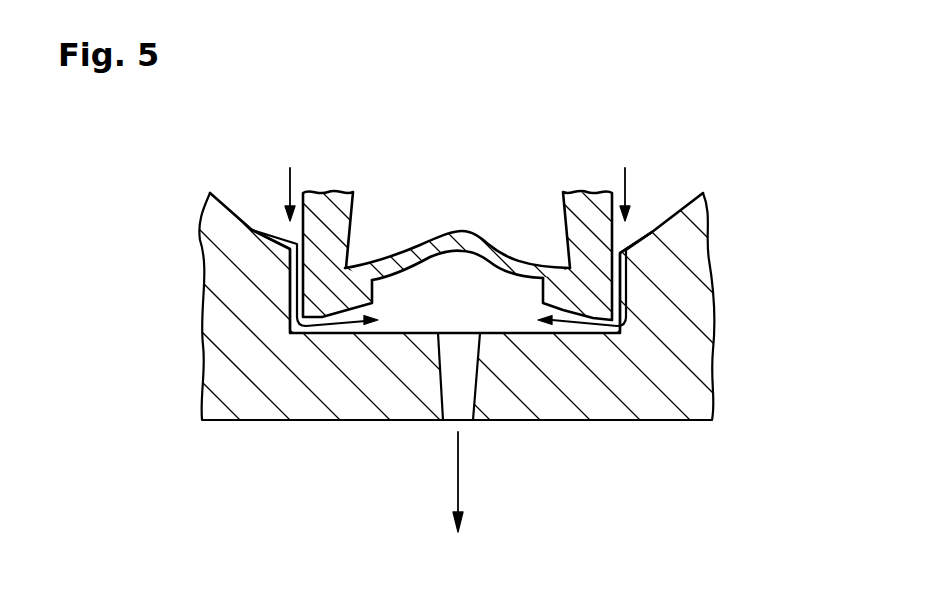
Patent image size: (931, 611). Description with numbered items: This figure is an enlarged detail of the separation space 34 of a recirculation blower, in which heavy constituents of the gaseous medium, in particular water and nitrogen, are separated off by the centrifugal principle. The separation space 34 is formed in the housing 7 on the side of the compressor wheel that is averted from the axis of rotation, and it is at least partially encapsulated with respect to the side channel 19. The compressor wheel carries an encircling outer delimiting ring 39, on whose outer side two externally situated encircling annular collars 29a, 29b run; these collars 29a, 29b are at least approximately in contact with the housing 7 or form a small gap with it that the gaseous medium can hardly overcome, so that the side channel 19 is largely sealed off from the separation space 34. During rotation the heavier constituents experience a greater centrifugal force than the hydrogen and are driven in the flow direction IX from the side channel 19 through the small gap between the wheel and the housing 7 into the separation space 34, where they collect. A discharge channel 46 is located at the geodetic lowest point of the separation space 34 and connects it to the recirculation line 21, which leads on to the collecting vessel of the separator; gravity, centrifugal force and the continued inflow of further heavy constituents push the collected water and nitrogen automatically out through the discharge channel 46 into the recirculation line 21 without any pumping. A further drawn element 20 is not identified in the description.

The housing 7 is at (220, 380).
The side channel 19 is at (250, 203).
The membrane 20 is at (457, 196).
The recirculation line 21 is at (457, 482).
The externally situated encircling annular collar 29a is at (309, 299).
The externally situated encircling annular collar 29b is at (612, 298).
The separation space 34 is at (513, 287).
The outer delimiting ring 39 is at (386, 253).
The discharge channel 46 is at (470, 386).
The flow direction IX is at (275, 246).